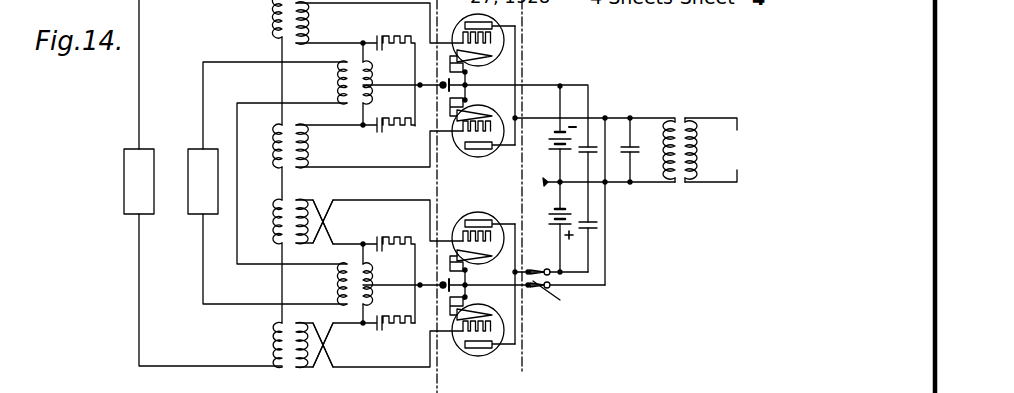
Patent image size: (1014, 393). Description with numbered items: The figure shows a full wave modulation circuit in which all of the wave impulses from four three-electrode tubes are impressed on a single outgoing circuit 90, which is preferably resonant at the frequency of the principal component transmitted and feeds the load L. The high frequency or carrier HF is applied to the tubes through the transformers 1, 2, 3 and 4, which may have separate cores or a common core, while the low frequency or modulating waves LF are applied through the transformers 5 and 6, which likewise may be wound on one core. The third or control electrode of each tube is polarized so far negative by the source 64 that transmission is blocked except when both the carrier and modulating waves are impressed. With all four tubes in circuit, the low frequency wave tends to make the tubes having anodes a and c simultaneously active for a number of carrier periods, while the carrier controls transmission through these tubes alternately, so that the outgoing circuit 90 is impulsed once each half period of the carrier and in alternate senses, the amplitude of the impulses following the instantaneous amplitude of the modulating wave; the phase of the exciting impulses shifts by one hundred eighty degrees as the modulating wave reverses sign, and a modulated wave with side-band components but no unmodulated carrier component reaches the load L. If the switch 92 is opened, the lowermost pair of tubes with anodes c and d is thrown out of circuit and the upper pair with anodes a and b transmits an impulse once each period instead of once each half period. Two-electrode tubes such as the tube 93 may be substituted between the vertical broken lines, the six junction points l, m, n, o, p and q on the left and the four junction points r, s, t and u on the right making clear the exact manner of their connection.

The transformer 1 is at (290, 28).
The transformer 2 is at (291, 155).
The transformer 3 is at (303, 230).
The transformer 4 is at (303, 354).
The transformer 5 is at (355, 91).
The transformer 6 is at (354, 292).
The source 64 is at (419, 86).
The outgoing circuit 90 is at (663, 150).
The switch 92 is at (565, 291).
The two-electrode tube 93 is at (509, 389).
The high frequency or carrier HF is at (139, 181).
The low frequency or modulating waves LF is at (203, 181).
The anode a is at (487, 23).
The anode b is at (486, 149).
The anode c is at (487, 221).
The anode d is at (488, 348).
The junction point l is at (379, 23).
The junction point m is at (403, 78).
The junction point n is at (379, 148).
The junction point o is at (379, 221).
The junction point p is at (403, 278).
The junction point q is at (379, 345).
The junction point r is at (571, 112).
The junction point s is at (518, 78).
The junction point t is at (521, 262).
The junction point u is at (490, 296).
The load L is at (711, 150).